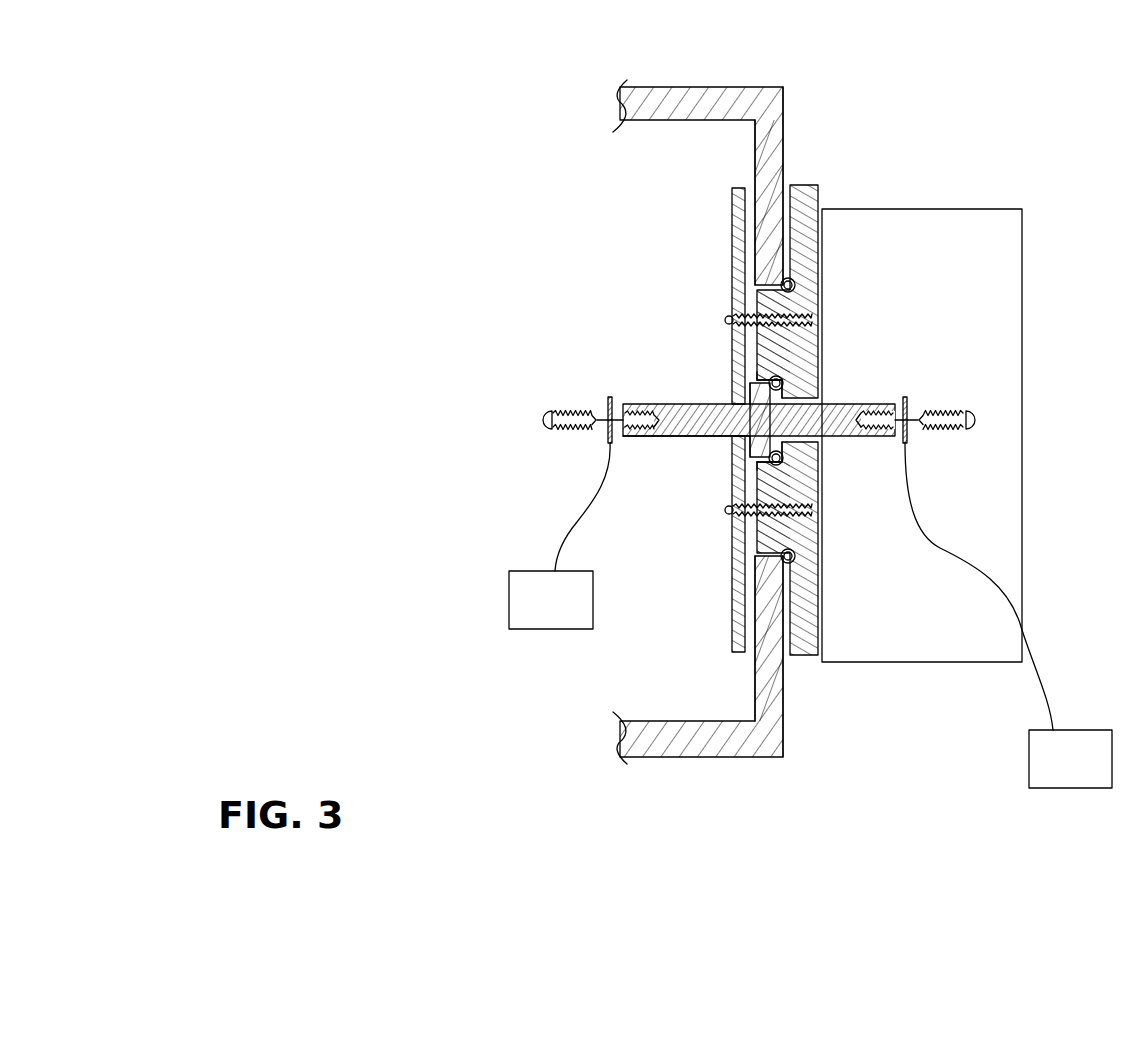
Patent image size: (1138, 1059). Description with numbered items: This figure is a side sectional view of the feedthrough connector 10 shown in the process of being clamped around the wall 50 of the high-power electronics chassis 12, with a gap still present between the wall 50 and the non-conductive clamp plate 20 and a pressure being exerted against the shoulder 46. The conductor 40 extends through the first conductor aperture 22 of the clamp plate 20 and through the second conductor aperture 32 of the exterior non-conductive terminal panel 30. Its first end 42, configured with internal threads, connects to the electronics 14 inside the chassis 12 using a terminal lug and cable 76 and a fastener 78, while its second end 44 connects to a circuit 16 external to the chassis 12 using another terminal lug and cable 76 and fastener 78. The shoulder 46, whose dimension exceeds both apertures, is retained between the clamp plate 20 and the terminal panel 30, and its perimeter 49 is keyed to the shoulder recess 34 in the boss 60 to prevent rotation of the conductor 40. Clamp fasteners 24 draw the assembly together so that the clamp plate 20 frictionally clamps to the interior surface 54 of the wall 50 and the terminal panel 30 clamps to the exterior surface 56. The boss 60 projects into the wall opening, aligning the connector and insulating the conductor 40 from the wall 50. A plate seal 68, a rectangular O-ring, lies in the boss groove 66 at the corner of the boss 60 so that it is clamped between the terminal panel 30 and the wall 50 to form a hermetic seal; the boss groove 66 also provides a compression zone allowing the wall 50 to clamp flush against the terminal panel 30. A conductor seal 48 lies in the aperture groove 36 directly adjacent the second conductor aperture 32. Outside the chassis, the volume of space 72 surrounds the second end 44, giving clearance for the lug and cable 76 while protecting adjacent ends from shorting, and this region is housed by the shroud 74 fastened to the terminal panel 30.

The feedthrough connector 10 is at (510, 173).
The electronics chassis 12 is at (783, 88).
The electronics 14 is at (533, 595).
The circuit 16 is at (1050, 752).
The clamp plate 20 is at (732, 208).
The first conductor aperture 22 is at (722, 439).
The clamp fastener 24 is at (728, 316).
The terminal panel 30 is at (818, 185).
The second conductor aperture 32 is at (822, 400).
The shoulder recess 34 is at (758, 373).
The aperture groove 36 is at (782, 384).
The conductor 40 is at (860, 404).
The first end 42 is at (635, 390).
The second end 44 is at (881, 448).
The shoulder 46 is at (755, 402).
The conductor seal 48 is at (784, 377).
The perimeter of the shoulder 49 is at (757, 460).
The wall 50 is at (776, 153).
The interior surface 54 is at (755, 156).
The exterior surface 56 is at (783, 120).
The boss 60 is at (782, 307).
The boss groove 66 is at (796, 288).
The plate seal 68 is at (792, 280).
The volume of space 72 is at (958, 267).
The shroud 74 is at (987, 283).
The terminal lug and cable 76 is at (577, 520).
The fastener 78 is at (545, 413).